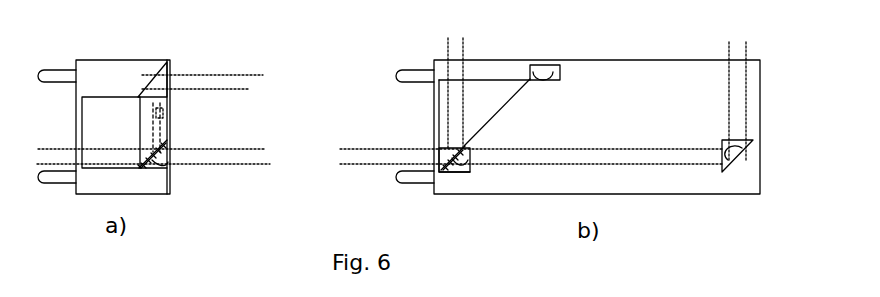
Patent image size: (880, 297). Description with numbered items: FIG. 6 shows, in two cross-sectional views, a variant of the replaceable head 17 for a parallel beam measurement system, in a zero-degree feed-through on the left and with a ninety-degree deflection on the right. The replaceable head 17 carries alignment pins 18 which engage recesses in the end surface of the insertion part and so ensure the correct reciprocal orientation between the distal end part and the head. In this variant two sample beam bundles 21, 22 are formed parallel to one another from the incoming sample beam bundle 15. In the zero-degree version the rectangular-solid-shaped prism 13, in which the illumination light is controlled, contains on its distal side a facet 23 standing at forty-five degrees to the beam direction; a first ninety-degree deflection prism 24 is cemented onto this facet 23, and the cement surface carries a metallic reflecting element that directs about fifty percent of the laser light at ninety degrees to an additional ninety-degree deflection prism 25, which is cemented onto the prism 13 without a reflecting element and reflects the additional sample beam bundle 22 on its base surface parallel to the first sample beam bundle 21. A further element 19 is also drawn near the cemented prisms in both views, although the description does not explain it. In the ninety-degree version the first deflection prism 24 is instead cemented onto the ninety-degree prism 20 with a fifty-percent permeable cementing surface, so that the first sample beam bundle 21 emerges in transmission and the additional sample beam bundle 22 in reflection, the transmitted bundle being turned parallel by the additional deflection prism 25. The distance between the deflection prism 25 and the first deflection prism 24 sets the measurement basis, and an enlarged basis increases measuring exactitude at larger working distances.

The rectangular-solid-shaped prism 13 is at (108, 106).
The sample beam bundle 15 is at (46, 148).
The replaceable head 17 is at (86, 72).
The alignment pins 18 is at (58, 78).
The detector 19 is at (165, 116).
The 90-degree prism 20 is at (503, 92).
The first sample beam bundle 21 is at (231, 154).
The additional sample beam bundle 22 is at (209, 80).
The facet 23 is at (151, 162).
The first 90-degree deflection prism 24 is at (170, 151).
The additional 90-degree deflection prism 25 is at (154, 86).